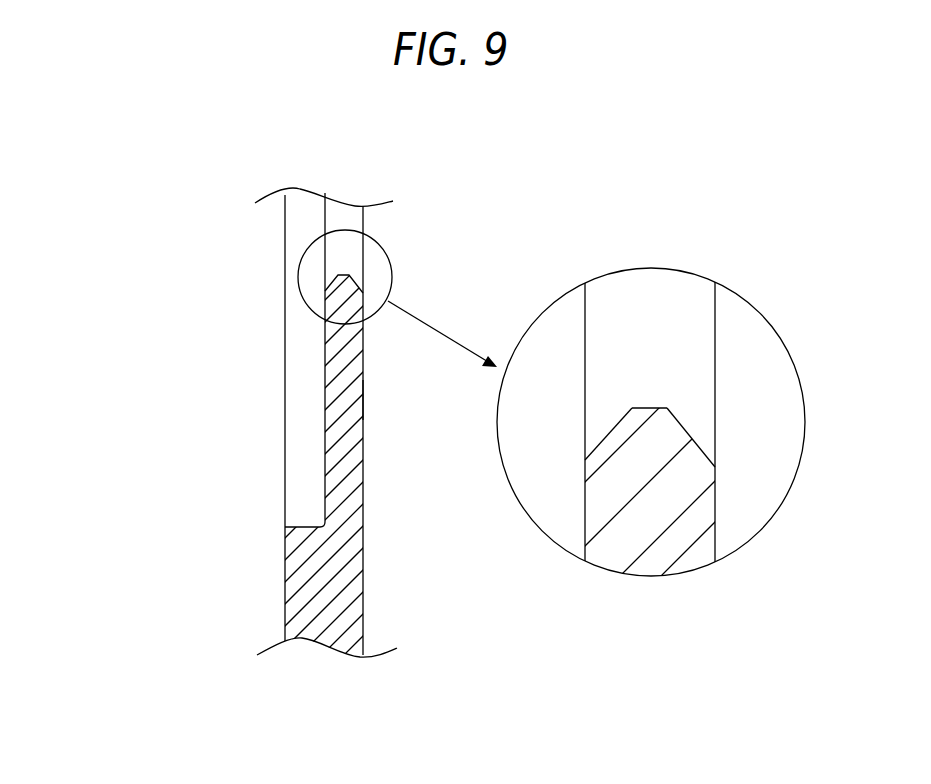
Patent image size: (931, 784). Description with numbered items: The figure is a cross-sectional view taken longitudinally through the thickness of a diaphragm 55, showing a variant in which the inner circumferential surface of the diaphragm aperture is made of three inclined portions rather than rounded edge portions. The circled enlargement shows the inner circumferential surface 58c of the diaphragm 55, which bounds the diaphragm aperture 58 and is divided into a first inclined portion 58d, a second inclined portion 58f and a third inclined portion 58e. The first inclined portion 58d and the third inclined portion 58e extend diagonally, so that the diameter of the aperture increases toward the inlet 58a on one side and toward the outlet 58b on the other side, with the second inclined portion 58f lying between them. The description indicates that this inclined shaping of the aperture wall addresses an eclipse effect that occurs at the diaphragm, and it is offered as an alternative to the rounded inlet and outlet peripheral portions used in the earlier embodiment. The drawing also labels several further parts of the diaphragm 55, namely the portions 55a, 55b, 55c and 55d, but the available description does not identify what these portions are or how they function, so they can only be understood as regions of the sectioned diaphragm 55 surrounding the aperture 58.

The diaphragm 55 is at (138, 256).
The upper portion of seal member 55a is at (340, 438).
The lower portion of seal member 55b is at (347, 588).
The inner surface 55c is at (322, 362).
The outer surface 55d is at (365, 399).
The protrusion 58 is at (338, 222).
The inlet 58a is at (585, 480).
The outlet 58b is at (716, 466).
The inner circumferential surface 58c is at (352, 240).
The first inclined portion 58d is at (612, 430).
The third inclined portion 58e is at (690, 437).
The second inclined portion 58f is at (648, 408).